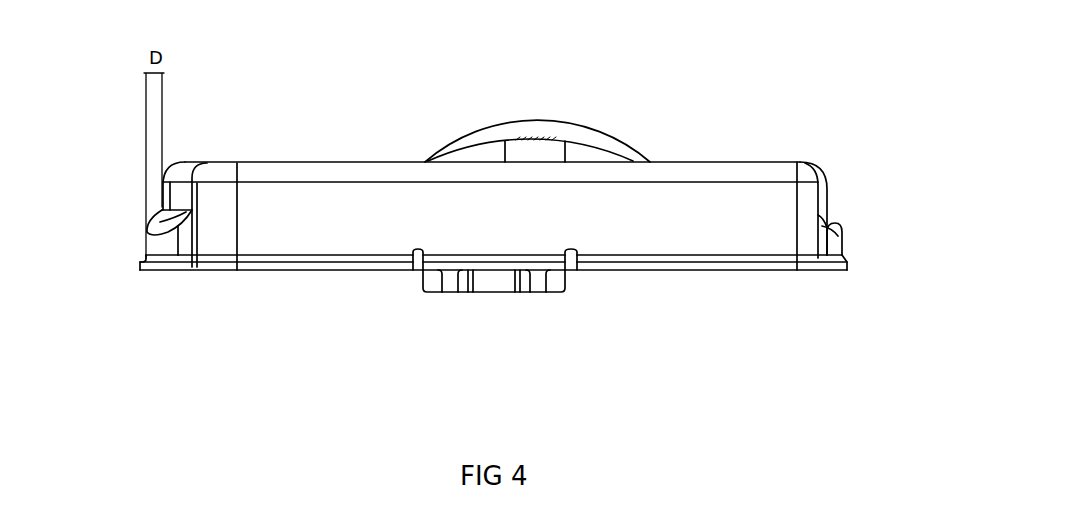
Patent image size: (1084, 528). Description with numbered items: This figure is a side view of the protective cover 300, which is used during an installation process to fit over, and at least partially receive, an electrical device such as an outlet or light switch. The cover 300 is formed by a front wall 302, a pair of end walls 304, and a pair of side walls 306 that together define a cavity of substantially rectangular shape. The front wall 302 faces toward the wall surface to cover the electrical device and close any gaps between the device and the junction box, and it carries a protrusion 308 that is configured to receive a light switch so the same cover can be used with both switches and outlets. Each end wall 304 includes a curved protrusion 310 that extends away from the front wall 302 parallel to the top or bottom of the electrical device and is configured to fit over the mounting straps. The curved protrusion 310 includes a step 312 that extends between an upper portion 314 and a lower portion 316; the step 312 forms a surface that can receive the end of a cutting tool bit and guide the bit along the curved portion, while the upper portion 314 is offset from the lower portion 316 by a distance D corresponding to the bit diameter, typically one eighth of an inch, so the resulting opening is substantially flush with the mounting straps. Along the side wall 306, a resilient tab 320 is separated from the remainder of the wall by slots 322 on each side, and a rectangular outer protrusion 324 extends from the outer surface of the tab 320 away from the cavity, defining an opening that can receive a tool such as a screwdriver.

The protective cover 300 is at (840, 108).
The front wall 302 is at (340, 162).
The end wall 304 is at (830, 185).
The side wall 306 is at (692, 230).
The protrusion 308 is at (565, 125).
The curved protrusion 310 is at (842, 247).
The step 312 is at (152, 232).
The upper portion 314 is at (163, 187).
The lower portion 316 is at (145, 240).
The resilient tab 320 is at (440, 259).
The slot 322 is at (570, 268).
The rectangular outer protrusion 324 is at (473, 290).